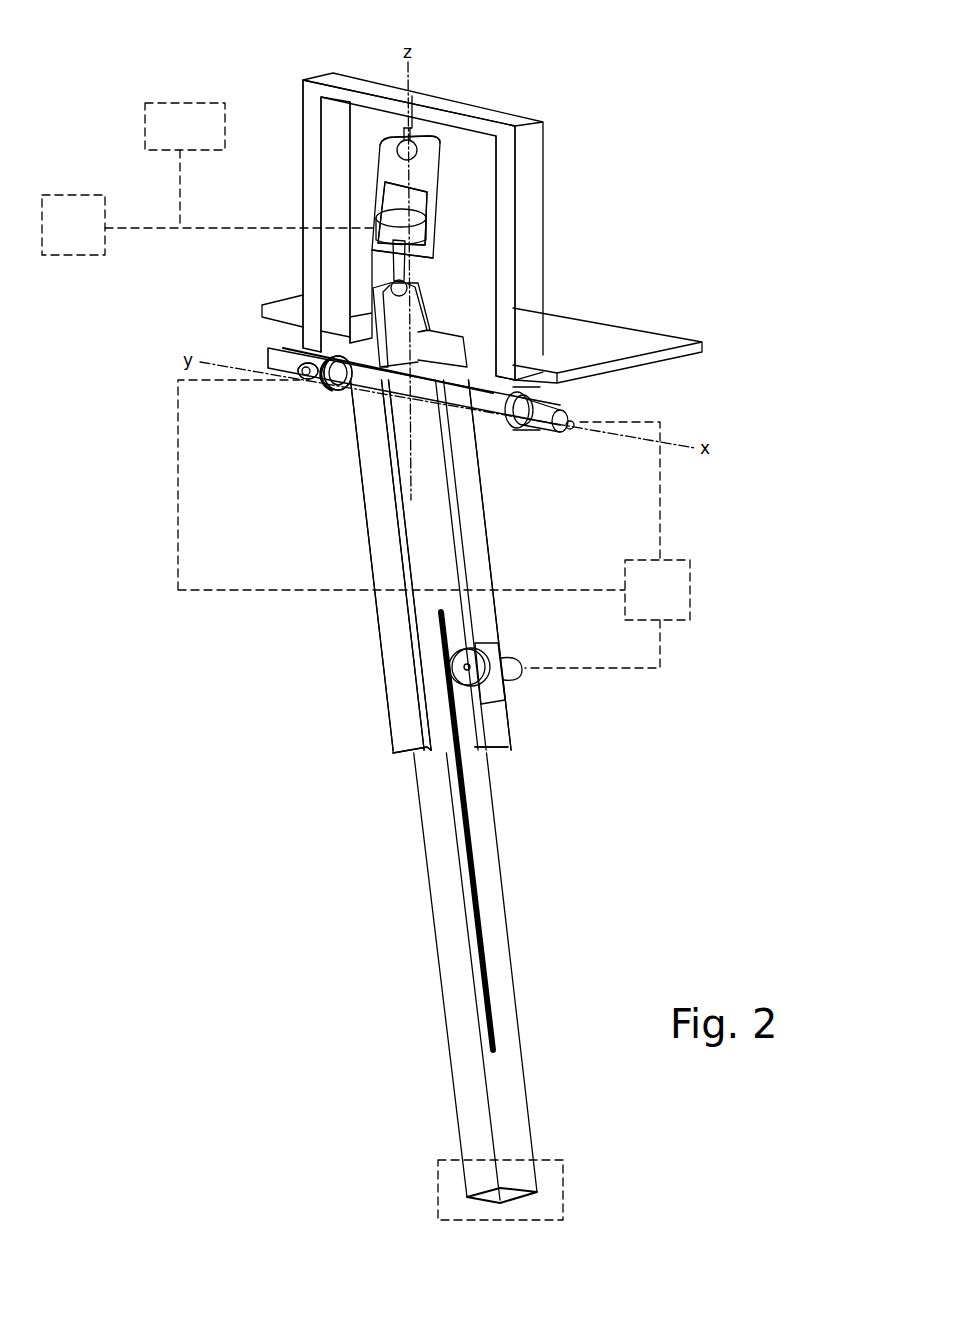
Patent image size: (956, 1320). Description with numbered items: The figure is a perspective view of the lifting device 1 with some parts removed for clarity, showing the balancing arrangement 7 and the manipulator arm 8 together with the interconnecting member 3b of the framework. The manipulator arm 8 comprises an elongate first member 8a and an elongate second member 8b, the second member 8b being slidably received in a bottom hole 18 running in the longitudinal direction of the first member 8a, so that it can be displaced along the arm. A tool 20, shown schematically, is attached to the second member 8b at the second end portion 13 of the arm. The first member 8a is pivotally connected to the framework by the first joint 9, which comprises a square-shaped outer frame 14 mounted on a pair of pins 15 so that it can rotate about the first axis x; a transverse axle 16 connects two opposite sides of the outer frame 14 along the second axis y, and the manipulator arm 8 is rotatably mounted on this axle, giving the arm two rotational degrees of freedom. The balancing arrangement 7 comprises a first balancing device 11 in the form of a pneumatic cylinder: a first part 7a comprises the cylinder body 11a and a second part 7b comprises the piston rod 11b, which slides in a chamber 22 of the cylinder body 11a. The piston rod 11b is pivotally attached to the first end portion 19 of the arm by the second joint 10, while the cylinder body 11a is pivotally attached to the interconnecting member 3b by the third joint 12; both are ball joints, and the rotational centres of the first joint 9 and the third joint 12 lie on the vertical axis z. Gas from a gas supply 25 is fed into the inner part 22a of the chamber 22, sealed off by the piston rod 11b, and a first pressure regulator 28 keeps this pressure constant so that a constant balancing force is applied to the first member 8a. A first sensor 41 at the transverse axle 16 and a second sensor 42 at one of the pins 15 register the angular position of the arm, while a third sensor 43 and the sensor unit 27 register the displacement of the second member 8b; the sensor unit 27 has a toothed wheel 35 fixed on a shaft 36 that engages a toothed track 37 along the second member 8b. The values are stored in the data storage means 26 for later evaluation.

The lifting device 1 is at (535, 78).
The balancing arrangement 7 is at (372, 123).
The first part of the balancing arrangement 7a is at (357, 205).
The second part of the balancing arrangement 7b is at (383, 266).
The interconnecting member 3b is at (428, 94).
The third joint 12 is at (416, 142).
The first balancing device 11 is at (442, 205).
The cylinder body 11a is at (442, 148).
The piston rod 11b is at (410, 257).
The chamber 22 is at (440, 193).
The inner part of the chamber 22a is at (380, 190).
The second joint 10 is at (408, 275).
The first end portion of the manipulator arm 19 is at (423, 312).
The outer frame 14 is at (327, 363).
The transverse axle 16 is at (300, 378).
The first sensor 41 is at (330, 388).
The first joint 9 is at (335, 400).
The pins 15 is at (513, 421).
The second sensor 42 is at (565, 412).
The manipulator arm 8 is at (375, 688).
The first member 8a is at (483, 570).
The second member 8b is at (505, 1118).
The bottom hole 18 is at (447, 508).
The toothed track 37 is at (443, 650).
The shaft 36 is at (455, 668).
The toothed wheel 35 is at (477, 648).
The sensor unit 27 is at (510, 652).
The third sensor 43 is at (500, 660).
The second end portion of the manipulator arm 13 is at (470, 1168).
The tool 20 is at (538, 1192).
The gas supply 25 is at (225, 117).
The data storage means 26 is at (690, 565).
The first pressure regulator 28 is at (80, 256).